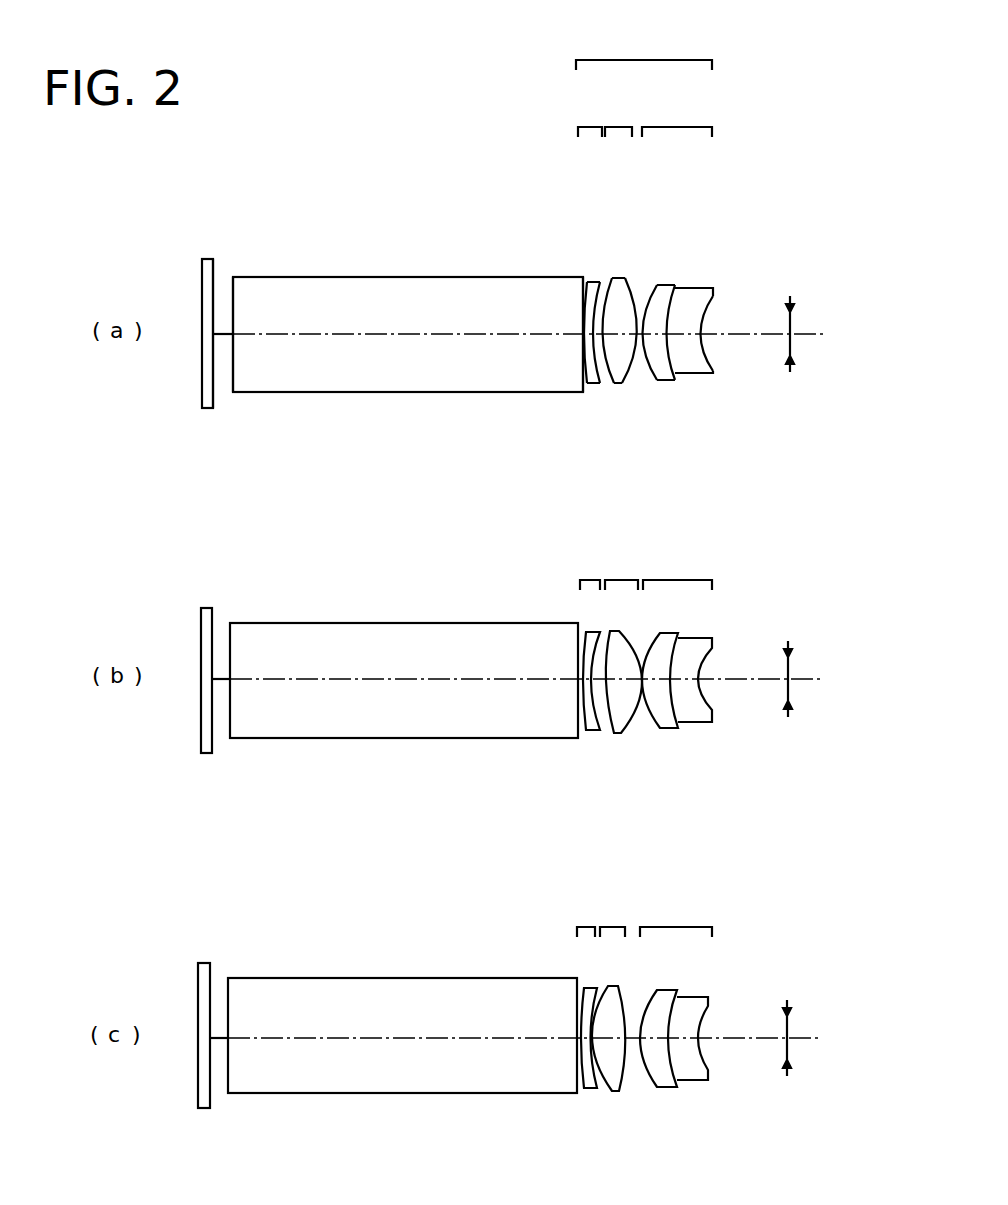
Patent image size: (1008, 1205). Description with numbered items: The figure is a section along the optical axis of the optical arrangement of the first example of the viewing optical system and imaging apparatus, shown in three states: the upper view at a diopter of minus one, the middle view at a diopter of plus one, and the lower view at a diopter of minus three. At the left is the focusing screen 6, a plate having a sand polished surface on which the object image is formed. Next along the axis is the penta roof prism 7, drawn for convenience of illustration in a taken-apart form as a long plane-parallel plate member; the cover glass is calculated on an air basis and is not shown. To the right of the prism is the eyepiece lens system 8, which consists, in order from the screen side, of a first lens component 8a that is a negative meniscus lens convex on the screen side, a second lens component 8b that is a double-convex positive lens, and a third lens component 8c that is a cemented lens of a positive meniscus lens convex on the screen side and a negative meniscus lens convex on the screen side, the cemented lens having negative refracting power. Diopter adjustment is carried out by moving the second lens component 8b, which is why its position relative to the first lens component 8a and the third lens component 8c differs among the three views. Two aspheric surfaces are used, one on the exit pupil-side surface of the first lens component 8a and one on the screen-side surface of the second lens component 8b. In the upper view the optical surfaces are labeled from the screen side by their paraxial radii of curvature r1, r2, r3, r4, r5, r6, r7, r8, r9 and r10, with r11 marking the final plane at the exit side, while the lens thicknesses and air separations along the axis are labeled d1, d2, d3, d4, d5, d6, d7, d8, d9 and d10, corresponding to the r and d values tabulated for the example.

The focusing screen 6 is at (205, 262).
The penta roof prism 7 is at (389, 288).
The eyepiece lens system 8 is at (655, 561).
The first lens component 8a is at (584, 595).
The second lens component 8b is at (618, 596).
The third lens component 8c is at (692, 594).
The lens surface r1 is at (218, 270).
The lens surface r2 is at (233, 290).
The lens surface r3 is at (583, 273).
The lens surface r4 is at (587, 279).
The lens surface r5 is at (599, 281).
The lens surface r6 is at (613, 277).
The lens surface r7 is at (632, 279).
The lens surface r8 is at (655, 285).
The lens surface r9 is at (676, 287).
The lens surface r10 is at (707, 312).
The surface r11 is at (796, 296).
The thickness or air separation d1 is at (224, 350).
The thickness or air separation d2 is at (393, 346).
The thickness or air separation d3 is at (585, 406).
The thickness or air separation d4 is at (593, 388).
The thickness or air separation d5 is at (614, 396).
The thickness or air separation d6 is at (622, 346).
The thickness or air separation d7 is at (649, 383).
The thickness or air separation d8 is at (669, 396).
The thickness or air separation d9 is at (689, 346).
The thickness or air separation d10 is at (749, 346).